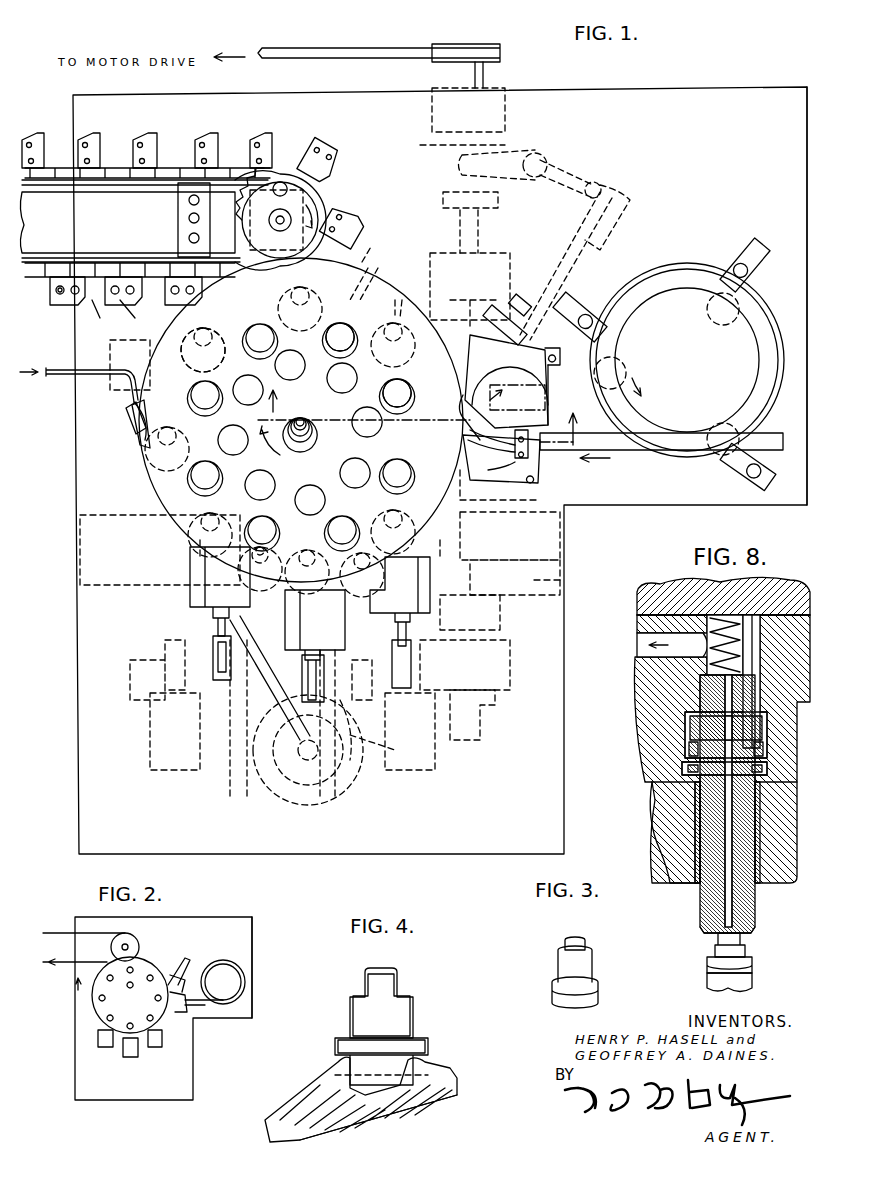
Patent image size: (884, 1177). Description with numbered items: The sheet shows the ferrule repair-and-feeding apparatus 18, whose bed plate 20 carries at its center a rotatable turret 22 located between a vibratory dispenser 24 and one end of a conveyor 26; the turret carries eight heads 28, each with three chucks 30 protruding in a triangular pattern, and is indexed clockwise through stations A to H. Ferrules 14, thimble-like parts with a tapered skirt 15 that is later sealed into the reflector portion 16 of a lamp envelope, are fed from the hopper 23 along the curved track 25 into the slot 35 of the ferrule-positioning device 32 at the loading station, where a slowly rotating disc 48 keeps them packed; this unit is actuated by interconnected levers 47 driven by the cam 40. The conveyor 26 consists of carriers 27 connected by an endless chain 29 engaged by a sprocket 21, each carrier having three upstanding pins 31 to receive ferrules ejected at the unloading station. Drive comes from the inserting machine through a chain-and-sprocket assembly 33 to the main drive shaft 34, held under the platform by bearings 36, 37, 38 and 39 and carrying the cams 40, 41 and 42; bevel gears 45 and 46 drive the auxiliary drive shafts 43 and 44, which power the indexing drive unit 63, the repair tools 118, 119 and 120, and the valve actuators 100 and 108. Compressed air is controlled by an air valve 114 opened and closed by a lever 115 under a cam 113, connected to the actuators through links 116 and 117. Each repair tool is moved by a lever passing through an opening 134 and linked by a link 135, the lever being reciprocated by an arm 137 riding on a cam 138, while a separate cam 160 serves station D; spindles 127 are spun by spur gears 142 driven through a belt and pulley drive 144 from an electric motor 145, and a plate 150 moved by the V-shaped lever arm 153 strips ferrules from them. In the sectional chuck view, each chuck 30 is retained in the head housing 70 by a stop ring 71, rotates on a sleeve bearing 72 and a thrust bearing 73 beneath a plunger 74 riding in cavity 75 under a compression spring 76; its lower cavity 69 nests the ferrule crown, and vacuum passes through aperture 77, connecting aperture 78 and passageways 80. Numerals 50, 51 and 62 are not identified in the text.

In FIG. 1, the metal ferrule 14 is at (100, 310).
In FIG. 3, the metal ferrule 14 is at (552, 956).
In FIG. 4, the metal ferrule 14 is at (422, 1013).
In FIG. 8, the metal ferrule 14 is at (745, 952).
In FIG. 3, the skirt 15 is at (551, 996).
In FIG. 4, the skirt 15 is at (430, 1042).
In FIG. 8, the skirt 15 is at (707, 975).
In FIG. 4, the reflector portion 16 is at (290, 1110).
In FIG. 1, the ferrule repair-and-feeding apparatus 18 is at (693, 78).
In FIG. 2, the ferrule repair-and-feeding apparatus 18 is at (262, 999).
In FIG. 1, the bed plate 20 is at (766, 100).
In FIG. 2, the bed plate 20 is at (215, 917).
In FIG. 1, the sprocket 21 is at (248, 210).
In FIG. 1, the turret 22 is at (145, 470).
In FIG. 2, the turret 22 is at (92, 1008).
In FIG. 8, the turret 22 is at (650, 596).
In FIG. 1, the hopper 23 is at (745, 394).
In FIG. 1, the vibratory dispenser 24 is at (770, 304).
In FIG. 2, the vibratory dispenser 24 is at (238, 965).
In FIG. 1, the track 25 is at (595, 452).
In FIG. 2, the track 25 is at (202, 1005).
In FIG. 1, the conveyor 26 is at (177, 160).
In FIG. 2, the conveyor 26 is at (48, 925).
In FIG. 1, the carriers 27 is at (34, 138).
In FIG. 1, the heads 28 is at (360, 285).
In FIG. 8, the heads 28 is at (652, 815).
In FIG. 1, the endless chain 29 is at (284, 168).
In FIG. 1, the chucks 30 is at (112, 440).
In FIG. 8, the chucks 30 is at (700, 905).
In FIG. 1, the upstanding pins 31 is at (168, 140).
In FIG. 1, the ferrule-positioning device 32 is at (539, 345).
In FIG. 2, the ferrule-positioning device 32 is at (175, 965).
In FIG. 1, the chain-and-sprocket assembly 33 is at (336, 48).
In FIG. 1, the main drive shaft 34 is at (485, 80).
In FIG. 1, the slot 35 is at (540, 462).
In FIG. 1, the bearing 36 is at (432, 112).
In FIG. 1, the bearing 37 is at (515, 262).
In FIG. 1, the bearing 38 is at (540, 496).
In FIG. 1, the bearing 39 is at (510, 680).
In FIG. 1, the cam 40 is at (525, 150).
In FIG. 1, the second cam 41 is at (562, 400).
In FIG. 1, the third cam 42 is at (565, 582).
In FIG. 1, the auxiliary drive shaft 43 is at (409, 296).
In FIG. 1, the auxiliary drive shaft 44 is at (372, 715).
In FIG. 1, the bevel gear 45 is at (443, 292).
In FIG. 1, the bevel gear 46 is at (470, 738).
In FIG. 1, the interconnected levers 47 is at (615, 186).
In FIG. 1, the rotating disc 48 is at (555, 354).
In FIG. 1, the pivot 50 is at (475, 306).
In FIG. 1, the turret pocket 51 is at (448, 374).
In FIG. 1, the arm 62 is at (560, 374).
In FIG. 1, the indexing drive unit 63 is at (380, 256).
In FIG. 8, the cavity 69 is at (702, 933).
In FIG. 8, the head housing 70 is at (640, 688).
In FIG. 8, the stop ring 71 is at (684, 770).
In FIG. 8, the sleeve bearing 72 is at (696, 844).
In FIG. 8, the thrust bearing 73 is at (690, 755).
In FIG. 8, the plunger 74 is at (700, 712).
In FIG. 8, the cavity 75 is at (780, 605).
In FIG. 8, the compression spring 76 is at (712, 615).
In FIG. 8, the aperture 77 is at (733, 907).
In FIG. 8, the connecting aperture 78 is at (712, 732).
In FIG. 8, the passageways 80 is at (640, 646).
In FIG. 1, the valve actuator 100 is at (360, 403).
In FIG. 1, the valve actuator 108 is at (315, 391).
In FIG. 1, the cam 113 is at (110, 343).
In FIG. 1, the air valve 114 is at (128, 418).
In FIG. 1, the lever 115 is at (125, 365).
In FIG. 1, the link 116 is at (175, 360).
In FIG. 1, the link 117 is at (345, 310).
In FIG. 1, the repair tool 118 is at (420, 602).
In FIG. 2, the repair tool 118 is at (155, 1047).
In FIG. 1, the repair tool 119 is at (322, 630).
In FIG. 2, the repair tool 119 is at (132, 1057).
In FIG. 1, the repair tool 120 is at (205, 590).
In FIG. 2, the repair tool 120 is at (103, 1047).
In FIG. 8, the spindle 127 is at (745, 982).
In FIG. 1, the opening 134 is at (213, 648).
In FIG. 1, the link 135 is at (238, 645).
In FIG. 1, the arm 137 is at (395, 768).
In FIG. 1, the cam 138 is at (355, 800).
In FIG. 1, the spur gears 142 is at (195, 548).
In FIG. 1, the belt and pulley drive 144 is at (292, 790).
In FIG. 1, the electric motor 145 is at (292, 808).
In FIG. 1, the plate 150 is at (80, 555).
In FIG. 1, the V-shaped lever arm 153 is at (493, 540).
In FIG. 1, the cam 160 is at (230, 800).